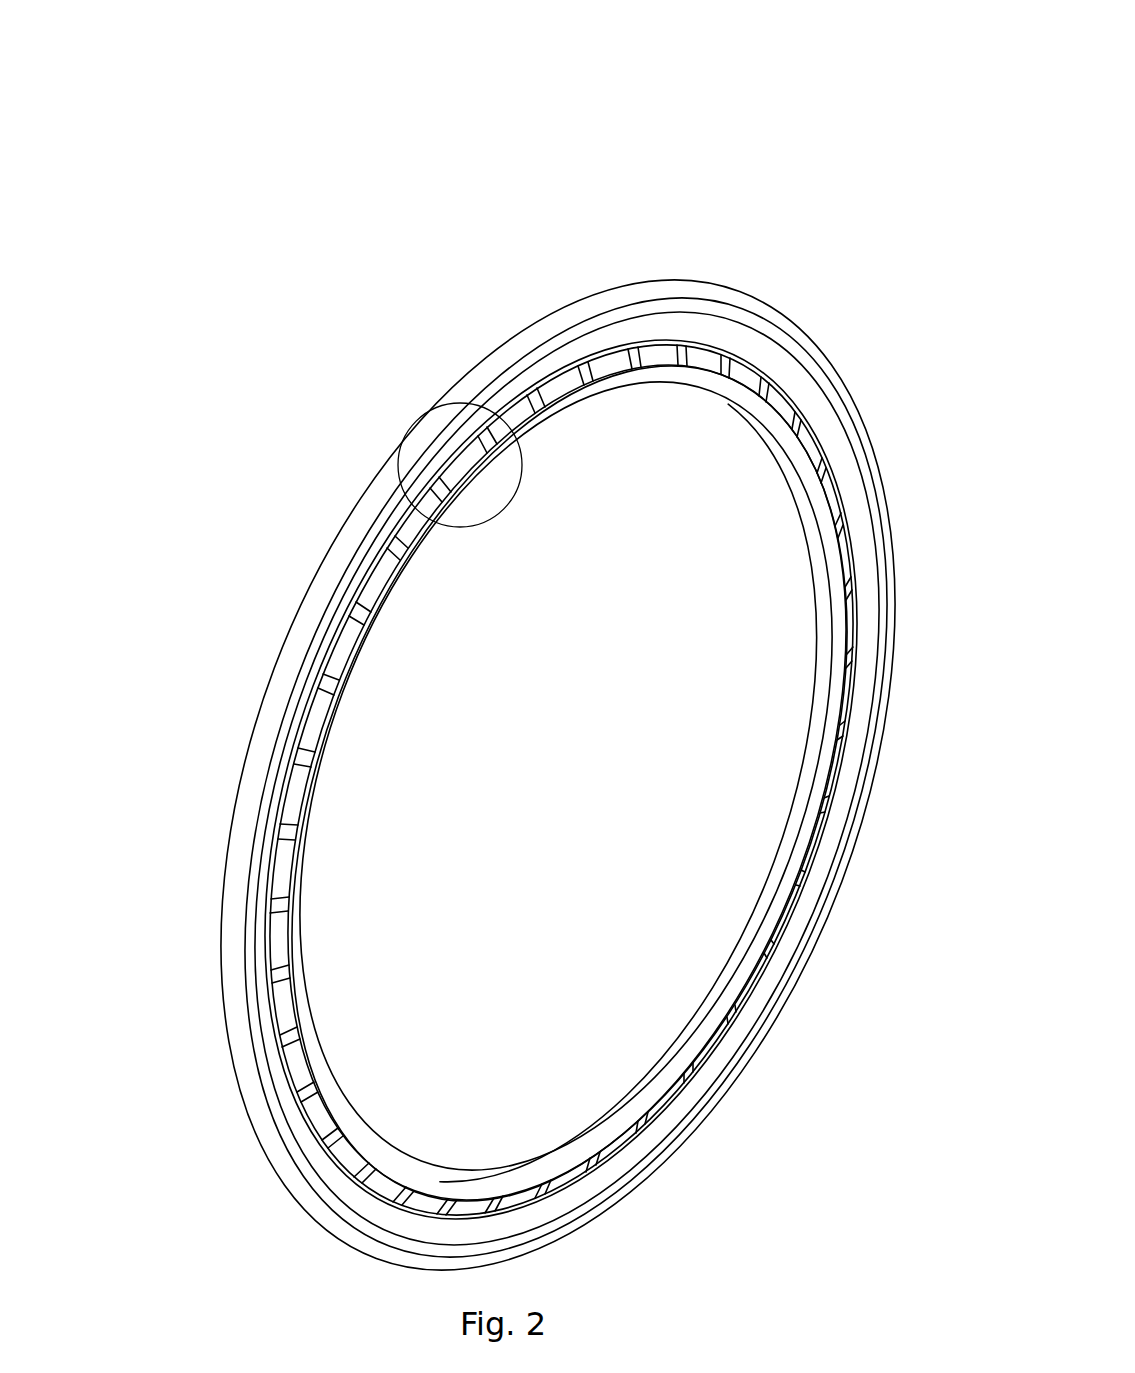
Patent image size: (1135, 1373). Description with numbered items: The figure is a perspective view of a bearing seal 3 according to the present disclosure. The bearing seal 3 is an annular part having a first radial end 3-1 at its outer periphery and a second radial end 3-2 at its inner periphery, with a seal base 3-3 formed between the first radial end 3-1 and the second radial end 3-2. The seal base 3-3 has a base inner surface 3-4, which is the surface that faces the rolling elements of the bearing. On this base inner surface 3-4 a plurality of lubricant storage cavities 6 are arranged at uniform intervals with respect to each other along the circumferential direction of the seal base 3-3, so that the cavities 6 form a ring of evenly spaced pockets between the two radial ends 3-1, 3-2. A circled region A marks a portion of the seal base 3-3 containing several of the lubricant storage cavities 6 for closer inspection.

The bearing seal 3 is at (675, 128).
The first radial end 3-1 is at (833, 398).
The second radial end 3-2 is at (803, 480).
The seal base 3-3 is at (395, 508).
The base inner surface 3-4 is at (553, 387).
The lubricant storage cavities 6 is at (600, 357).
The detail region A is at (405, 428).